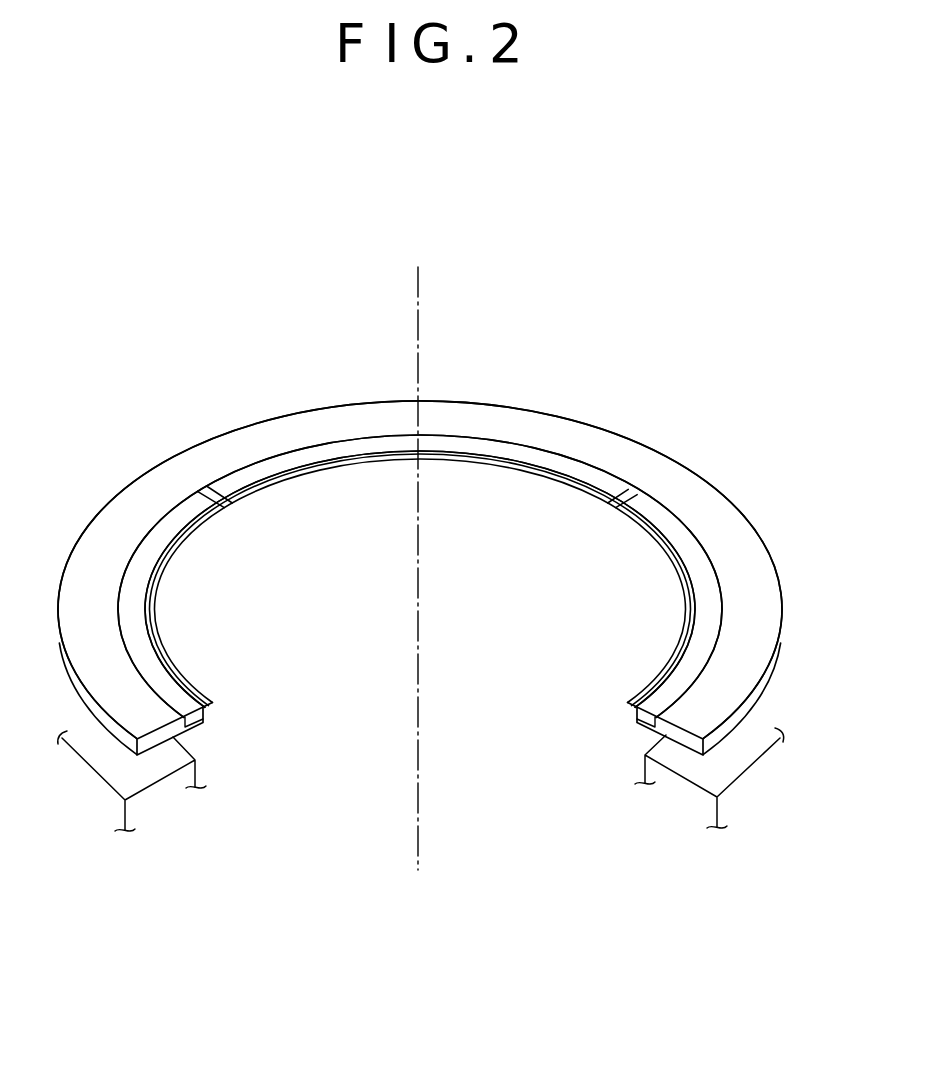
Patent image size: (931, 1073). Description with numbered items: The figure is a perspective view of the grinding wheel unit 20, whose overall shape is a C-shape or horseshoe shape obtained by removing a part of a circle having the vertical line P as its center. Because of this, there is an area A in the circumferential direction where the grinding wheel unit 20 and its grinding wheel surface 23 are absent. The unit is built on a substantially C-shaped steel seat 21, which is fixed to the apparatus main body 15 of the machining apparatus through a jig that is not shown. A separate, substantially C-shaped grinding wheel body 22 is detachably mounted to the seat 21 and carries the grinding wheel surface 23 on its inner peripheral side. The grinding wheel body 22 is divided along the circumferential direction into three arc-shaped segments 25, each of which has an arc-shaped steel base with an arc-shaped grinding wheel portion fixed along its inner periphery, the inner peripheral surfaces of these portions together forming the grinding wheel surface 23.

The apparatus main body 15 is at (722, 772).
The grinding wheel unit 20 is at (688, 468).
The seat 21 is at (732, 533).
The grinding wheel body 22 is at (703, 590).
The grinding wheel surface 23 is at (204, 523).
The segments 25 is at (177, 523).
The vertical line P is at (412, 311).
The area A is at (318, 802).